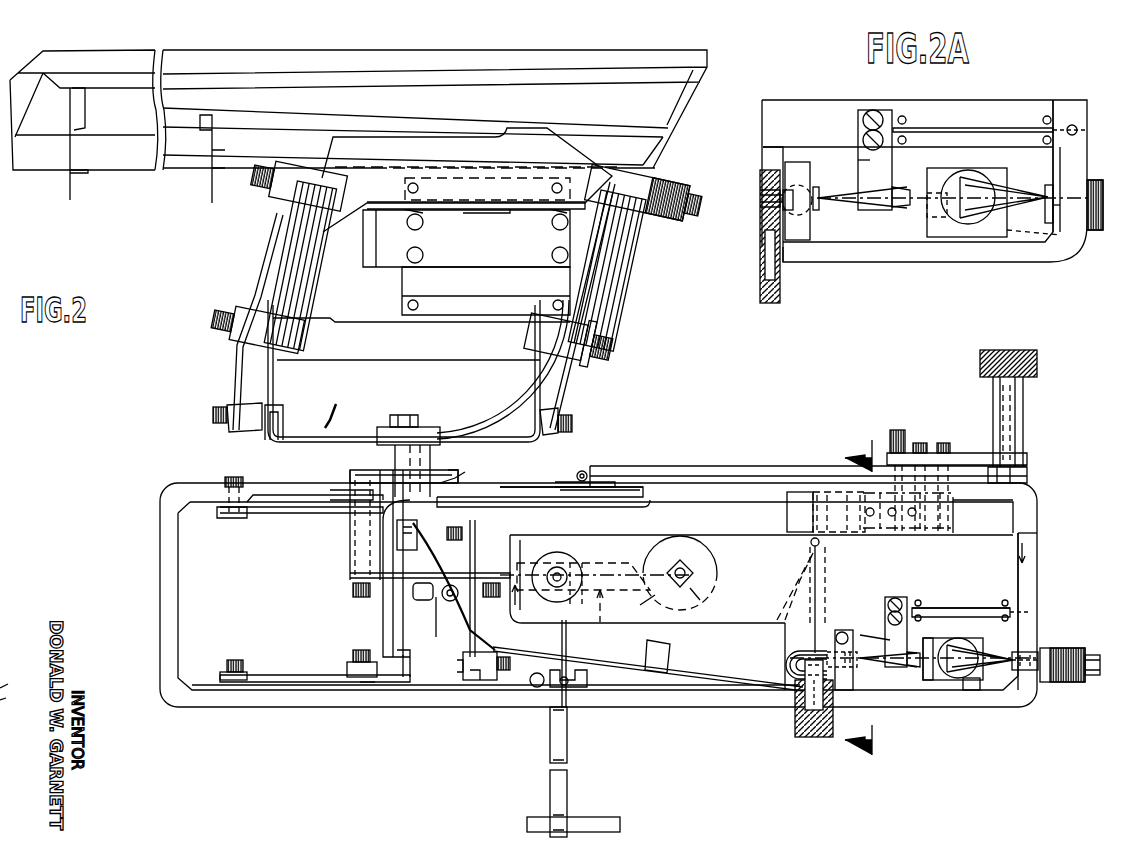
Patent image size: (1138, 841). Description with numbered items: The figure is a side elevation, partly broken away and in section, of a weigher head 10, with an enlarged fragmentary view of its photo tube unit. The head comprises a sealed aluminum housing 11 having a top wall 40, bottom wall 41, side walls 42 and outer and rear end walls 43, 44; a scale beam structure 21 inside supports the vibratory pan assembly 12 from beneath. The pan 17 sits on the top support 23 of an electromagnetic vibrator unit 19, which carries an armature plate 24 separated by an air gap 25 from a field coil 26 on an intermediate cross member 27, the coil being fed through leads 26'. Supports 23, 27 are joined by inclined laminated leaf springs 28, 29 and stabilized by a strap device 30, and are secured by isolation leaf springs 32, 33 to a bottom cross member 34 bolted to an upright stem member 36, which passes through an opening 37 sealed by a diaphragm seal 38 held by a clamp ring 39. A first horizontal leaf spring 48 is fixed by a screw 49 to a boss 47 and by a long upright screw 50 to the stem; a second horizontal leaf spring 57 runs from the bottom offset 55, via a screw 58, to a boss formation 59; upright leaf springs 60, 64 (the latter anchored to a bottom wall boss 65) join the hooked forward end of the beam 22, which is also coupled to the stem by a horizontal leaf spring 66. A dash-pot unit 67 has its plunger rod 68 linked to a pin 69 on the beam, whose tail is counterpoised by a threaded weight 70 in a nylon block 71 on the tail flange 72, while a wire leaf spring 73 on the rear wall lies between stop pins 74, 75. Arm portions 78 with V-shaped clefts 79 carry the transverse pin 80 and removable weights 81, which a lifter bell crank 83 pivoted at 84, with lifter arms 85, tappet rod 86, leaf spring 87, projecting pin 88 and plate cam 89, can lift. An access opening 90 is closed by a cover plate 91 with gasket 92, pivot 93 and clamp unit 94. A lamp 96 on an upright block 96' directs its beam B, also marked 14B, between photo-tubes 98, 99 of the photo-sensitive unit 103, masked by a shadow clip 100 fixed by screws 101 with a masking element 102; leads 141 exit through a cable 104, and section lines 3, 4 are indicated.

In FIG. 2, the weigher head 10 is at (140, 466).
In FIG. 2, the housing 11 is at (1037, 507).
In FIG. 2A, the housing 11 is at (1040, 259).
In FIG. 2, the vibratory tray or pan assembly 12 is at (660, 177).
In FIG. 2, the light beam 14B is at (900, 672).
In FIG. 2A, the beam of lamp B is at (850, 217).
In FIG. 2, the tray or pan 17 is at (175, 167).
In FIG. 2, the electromagnetic vibrator unit 19 is at (372, 359).
In FIG. 2, the scale beam structure 21 is at (586, 461).
In FIG. 2, the beam 22 is at (740, 550).
In FIG. 2A, the beam 22 is at (787, 114).
In FIG. 2, the top support 23 is at (570, 152).
In FIG. 2, the electromagnetic armature plate 24 is at (450, 202).
In FIG. 2, the air gap 25 is at (527, 203).
In FIG. 2, the electromagnet field coil 26 is at (449, 238).
In FIG. 2, the leads 26' is at (503, 369).
In FIG. 2, the intermediate cross member 27 is at (375, 332).
In FIG. 2, the laminated fiberglass leaf springs 28 is at (305, 230).
In FIG. 2, the laminated fiberglass leaf springs 29 is at (615, 272).
In FIG. 2, the upright strap device 30 is at (250, 292).
In FIG. 2, the front isolation leaf spring 32 is at (270, 404).
In FIG. 2, the rear isolation leaf spring 33 is at (565, 392).
In FIG. 2, the bottom cross member 34 is at (352, 442).
In FIG. 2, the stem member 36 is at (435, 459).
In FIG. 2, the opening 37 is at (460, 490).
In FIG. 2, the flexible diaphragm type seal 38 is at (368, 472).
In FIG. 2, the clamp ring 39 is at (340, 484).
In FIG. 2, the top wall 40 is at (527, 492).
In FIG. 2, the bottom wall 41 is at (635, 699).
In FIG. 2, the side walls 42 is at (758, 682).
In FIG. 2A, the side walls 42 is at (803, 257).
In FIG. 2, the radially outer end wall 43 is at (160, 555).
In FIG. 2, the rear end wall 44 is at (1022, 582).
In FIG. 2A, the rear end wall 44 is at (1072, 170).
In FIG. 2, the boss 47 is at (222, 522).
In FIG. 2, the first horizontal leaf spring 48 is at (340, 515).
In FIG. 2, the screw 49 is at (225, 478).
In FIG. 2, the long upright screw 50 is at (352, 592).
In FIG. 2, the bottom offset 55 is at (348, 667).
In FIG. 2, the second horizontal leaf spring 57 is at (275, 677).
In FIG. 2, the screw 58 is at (368, 685).
In FIG. 2, the boss formation 59 is at (236, 685).
In FIG. 2, the upright leaf spring 60 is at (405, 644).
In FIG. 2, the second upright leaf spring 64 is at (455, 602).
In FIG. 2, the bottom wall boss 65 is at (462, 674).
In FIG. 2, the horizontal leaf spring 66 is at (450, 575).
In FIG. 2, the hydraulic dash-pot unit 67 is at (796, 712).
In FIG. 2A, the hydraulic dash-pot unit 67 is at (760, 297).
In FIG. 2, the plunger rod 68 is at (818, 555).
In FIG. 2, the pin 69 is at (810, 545).
In FIG. 2, the weight 70 is at (803, 494).
In FIG. 2, the nylon block 71 is at (826, 494).
In FIG. 2, the tail flange 72 is at (940, 610).
In FIG. 2, the leaf spring 73 is at (972, 610).
In FIG. 2A, the leaf spring 73 is at (980, 135).
In FIG. 2, the upper stop pins 74 is at (921, 607).
In FIG. 2A, the upper stop pins 74 is at (905, 123).
In FIG. 2, the lower stop pins 75 is at (1008, 620).
In FIG. 2A, the lower stop pins 75 is at (1053, 142).
In FIG. 2, the arm portions 78 is at (690, 569).
In FIG. 2, the V-shaped cleft 79 is at (680, 570).
In FIG. 2, the transverse pin 80 is at (705, 600).
In FIG. 2, the removable weights 81 is at (682, 567).
In FIG. 2, the lifter bell crank 83 is at (600, 627).
In FIG. 2, the pivot 84 is at (557, 577).
In FIG. 2, the lifter arms 85 is at (665, 567).
In FIG. 2, the tappet rod 86 is at (568, 782).
In FIG. 2, the upright leaf spring 87 is at (548, 662).
In FIG. 2, the projecting pin 88 is at (568, 692).
In FIG. 2, the fixed plate cam 89 is at (610, 820).
In FIG. 2, the elongated opening 90 is at (648, 489).
In FIG. 2, the cover plate 91 is at (718, 468).
In FIG. 2, the sealing gasket 92 is at (748, 478).
In FIG. 2, the pivot 93 is at (587, 473).
In FIG. 2, the releasable clamp unit 94 is at (1025, 439).
In FIG. 2, the lamp 96 is at (864, 682).
In FIG. 2A, the lamp 96 is at (810, 238).
In FIG. 2, the upright block 96' is at (787, 650).
In FIG. 2A, the upright block 96' is at (791, 177).
In FIG. 2, the upper photo-tube 98 is at (928, 642).
In FIG. 2A, the upper photo-tube 98 is at (928, 195).
In FIG. 2, the lower photo-tube 99 is at (942, 682).
In FIG. 2A, the lower photo-tube 99 is at (935, 232).
In FIG. 2, the shadow clip 100 is at (885, 602).
In FIG. 2A, the shadow clip 100 is at (862, 163).
In FIG. 2, the screws 101 is at (888, 620).
In FIG. 2A, the screws 101 is at (880, 124).
In FIG. 2, the masking element 102 is at (925, 670).
In FIG. 2A, the masking element 102 is at (910, 192).
In FIG. 2, the photo-sensitive unit 103 is at (975, 690).
In FIG. 2A, the photo-sensitive unit 103 is at (975, 230).
In FIG. 2, the cable 104 is at (1088, 682).
In FIG. 2A, the cable 104 is at (1095, 205).
In FIG. 2, the input leads 141 is at (1005, 652).
In FIG. 2A, the input leads 141 is at (1035, 197).
In FIG. 2, the section line 3 is at (515, 594).
In FIG. 2, the section line 4 is at (858, 594).